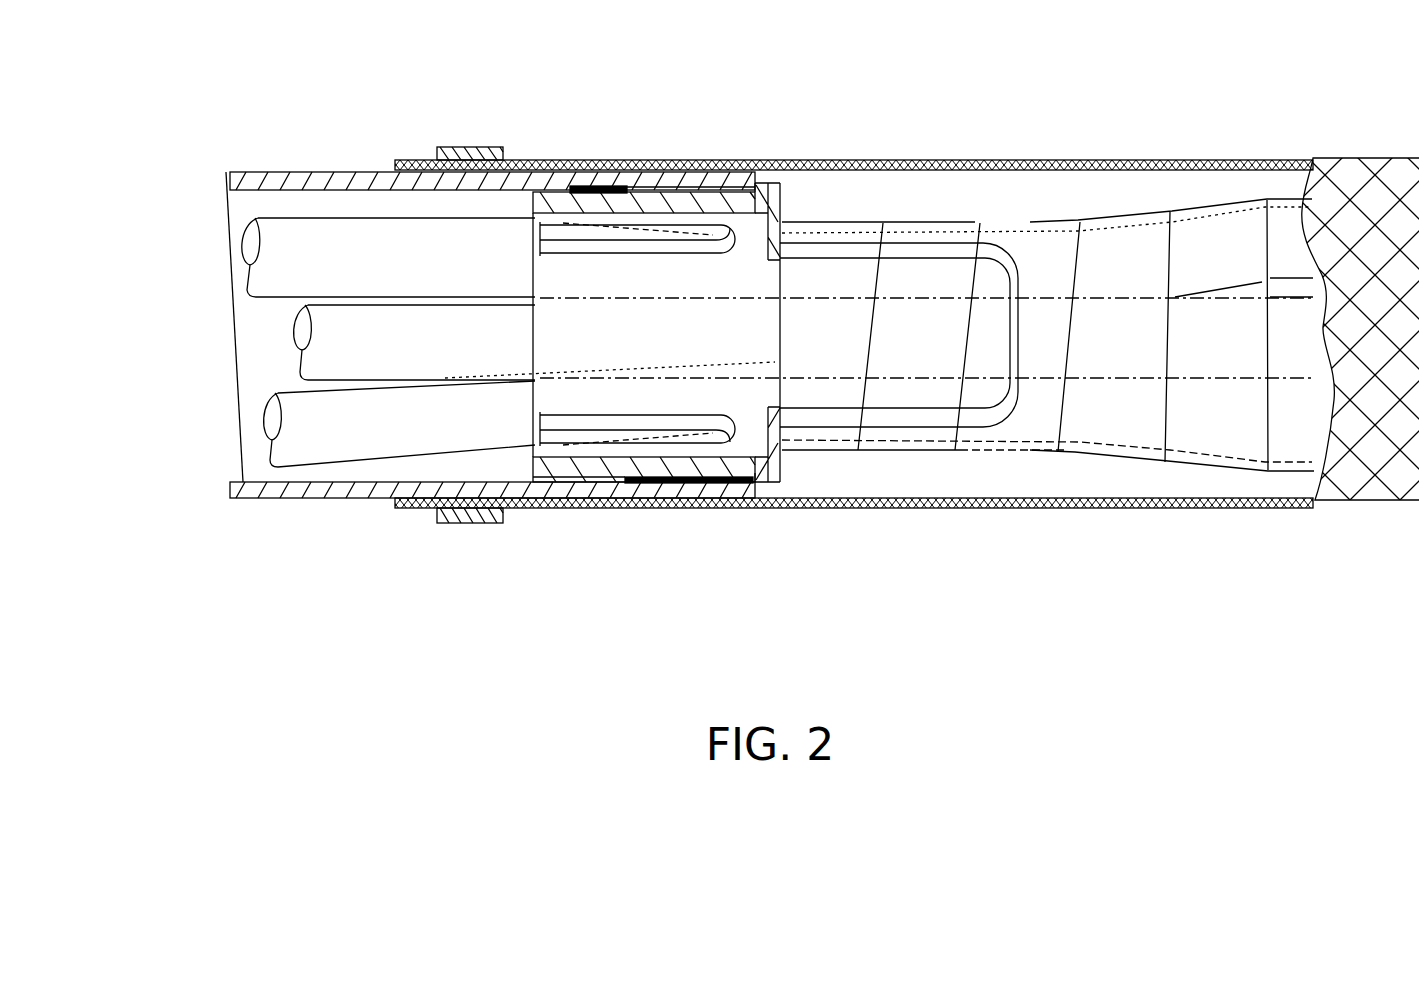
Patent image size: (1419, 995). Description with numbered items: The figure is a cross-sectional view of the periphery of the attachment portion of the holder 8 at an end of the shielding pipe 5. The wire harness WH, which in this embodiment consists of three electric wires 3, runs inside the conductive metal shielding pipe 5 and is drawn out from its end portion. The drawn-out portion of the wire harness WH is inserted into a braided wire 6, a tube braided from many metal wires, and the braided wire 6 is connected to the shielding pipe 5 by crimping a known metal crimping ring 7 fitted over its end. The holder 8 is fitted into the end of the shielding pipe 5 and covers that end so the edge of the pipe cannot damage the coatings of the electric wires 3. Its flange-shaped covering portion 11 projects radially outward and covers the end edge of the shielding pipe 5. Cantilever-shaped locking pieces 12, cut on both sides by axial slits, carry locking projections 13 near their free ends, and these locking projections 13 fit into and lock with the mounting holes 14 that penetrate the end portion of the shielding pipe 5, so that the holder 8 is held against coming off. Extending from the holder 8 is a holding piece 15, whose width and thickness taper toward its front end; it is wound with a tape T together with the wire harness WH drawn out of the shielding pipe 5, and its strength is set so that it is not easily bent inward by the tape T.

The electric wire 3 is at (263, 286).
The shielding pipe 5 is at (308, 498).
The braided wire 6 is at (853, 508).
The crimping ring 7 is at (470, 523).
The holder 8 is at (742, 275).
The covering portion 11 is at (772, 486).
The locking piece 12 is at (680, 198).
The locking projection 13 is at (607, 186).
The mounting hole 14 is at (579, 183).
The holding piece 15 is at (866, 250).
The tape T is at (1032, 222).
The wire harness WH is at (704, 342).